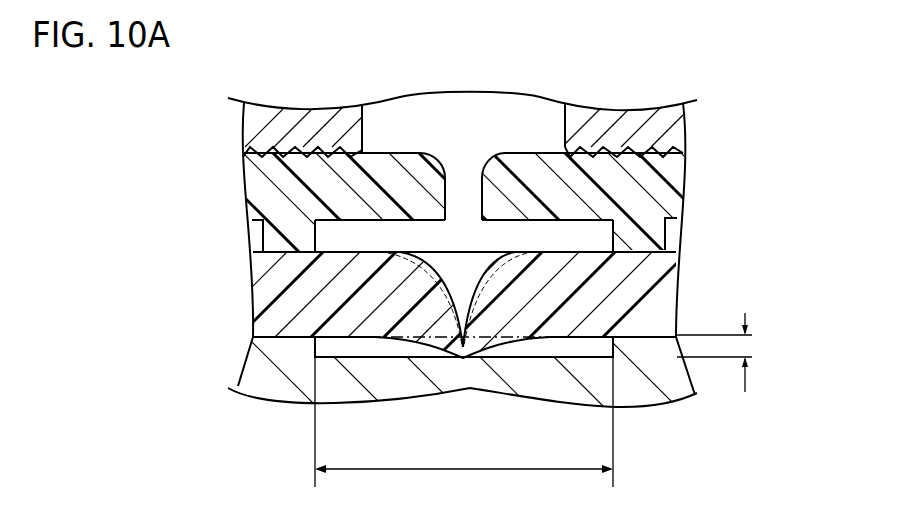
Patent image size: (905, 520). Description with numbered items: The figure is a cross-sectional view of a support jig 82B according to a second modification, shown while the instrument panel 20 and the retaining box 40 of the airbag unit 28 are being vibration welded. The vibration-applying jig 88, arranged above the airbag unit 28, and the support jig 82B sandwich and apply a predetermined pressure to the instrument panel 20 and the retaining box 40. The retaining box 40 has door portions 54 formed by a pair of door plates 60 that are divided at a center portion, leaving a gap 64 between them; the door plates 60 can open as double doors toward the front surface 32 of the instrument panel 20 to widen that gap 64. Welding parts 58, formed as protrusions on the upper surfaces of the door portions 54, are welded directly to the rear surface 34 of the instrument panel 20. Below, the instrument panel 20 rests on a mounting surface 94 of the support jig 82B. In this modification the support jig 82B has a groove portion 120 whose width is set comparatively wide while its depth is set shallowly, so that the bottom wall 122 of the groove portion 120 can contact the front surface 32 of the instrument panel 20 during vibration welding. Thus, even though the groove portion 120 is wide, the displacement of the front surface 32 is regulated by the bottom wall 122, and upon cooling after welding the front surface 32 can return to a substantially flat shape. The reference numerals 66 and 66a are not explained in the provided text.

The vibration-applying jig 88 is at (312, 113).
The retaining box 40 is at (236, 182).
The airbag unit 28 is at (347, 187).
The rear surface of the instrument panel 34 is at (382, 250).
The gap 64 is at (461, 180).
The door plates 60 is at (672, 175).
The door portions 54 is at (600, 203).
The welding parts 58 is at (635, 239).
The instrument panel 20 is at (247, 268).
The deformed groove 66a is at (463, 345).
The groove 66 is at (465, 251).
The groove portion 120 is at (323, 329).
The bottom wall 122 is at (380, 347).
The mounting surface 94 is at (660, 333).
The support jig 82B is at (237, 366).
The front surface of the instrument panel 32 is at (288, 339).